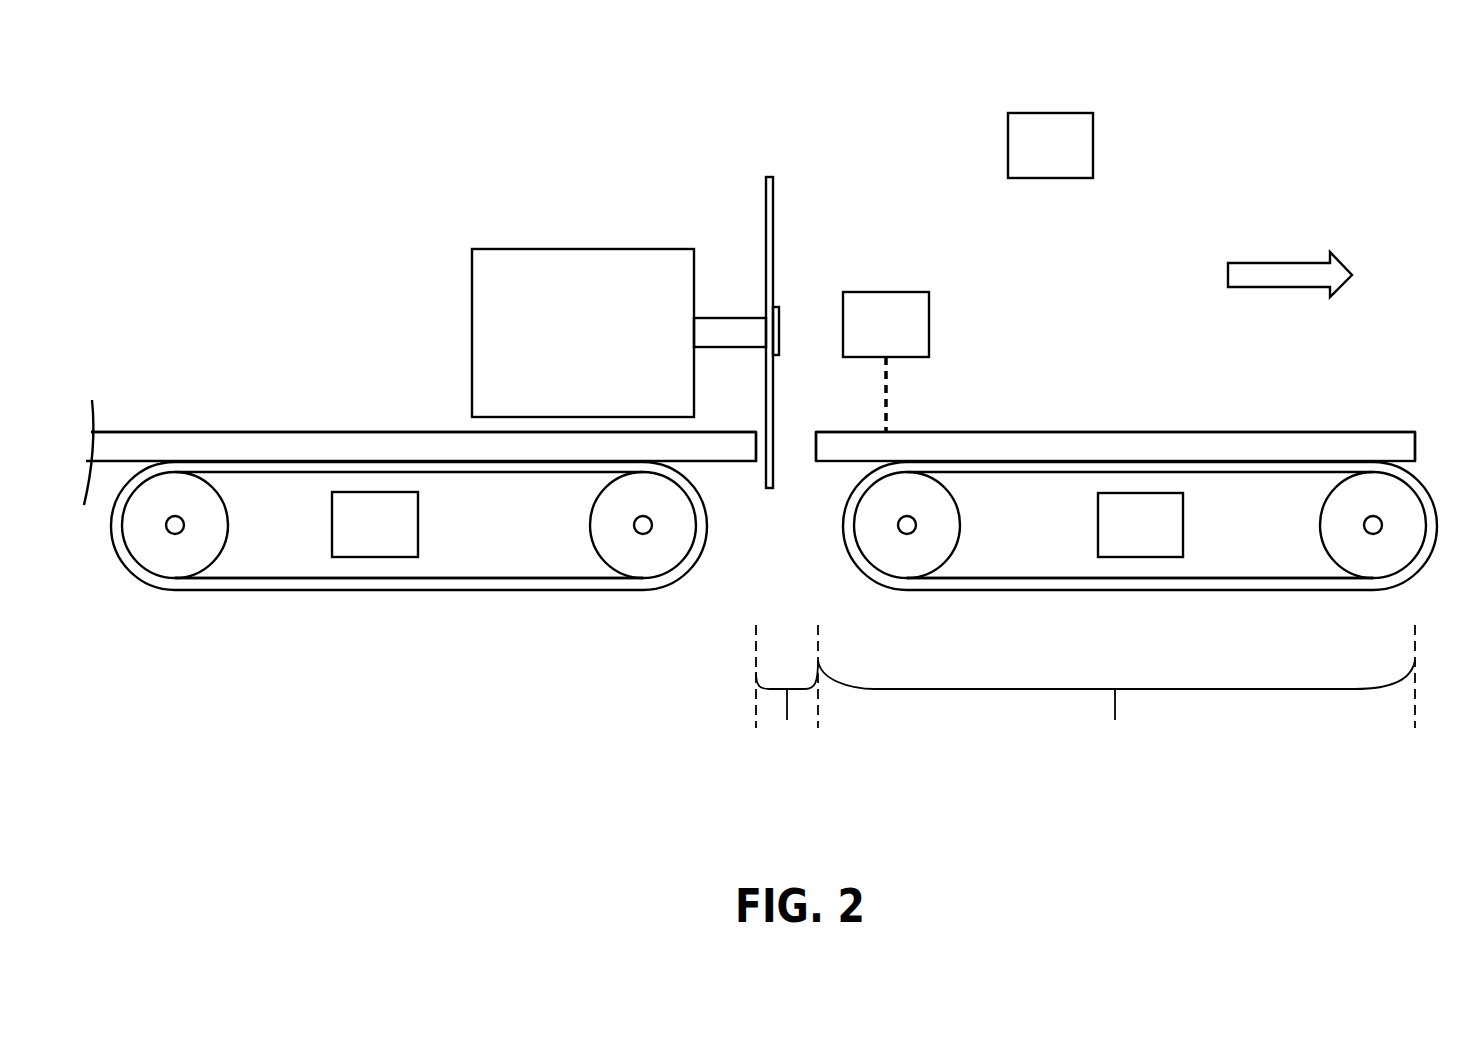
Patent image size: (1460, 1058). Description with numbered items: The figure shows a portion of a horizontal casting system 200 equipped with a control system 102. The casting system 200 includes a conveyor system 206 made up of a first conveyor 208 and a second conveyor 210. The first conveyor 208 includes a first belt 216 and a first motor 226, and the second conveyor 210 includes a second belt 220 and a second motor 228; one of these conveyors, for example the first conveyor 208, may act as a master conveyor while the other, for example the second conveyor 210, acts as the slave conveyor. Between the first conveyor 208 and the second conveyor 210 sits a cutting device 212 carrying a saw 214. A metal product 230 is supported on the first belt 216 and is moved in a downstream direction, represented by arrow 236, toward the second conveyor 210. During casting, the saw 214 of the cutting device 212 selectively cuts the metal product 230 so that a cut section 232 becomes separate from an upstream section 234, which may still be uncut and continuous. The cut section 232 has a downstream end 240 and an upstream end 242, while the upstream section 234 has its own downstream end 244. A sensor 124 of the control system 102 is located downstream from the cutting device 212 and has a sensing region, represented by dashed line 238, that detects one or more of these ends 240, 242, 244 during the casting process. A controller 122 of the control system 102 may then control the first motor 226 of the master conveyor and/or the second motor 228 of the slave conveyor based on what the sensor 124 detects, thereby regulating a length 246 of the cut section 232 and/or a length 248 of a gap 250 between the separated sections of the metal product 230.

The casting system 200 is at (356, 170).
The control system 102 is at (895, 106).
The conveyor system 206 is at (1233, 178).
The controller 122 is at (1050, 145).
The sensor 124 is at (886, 324).
The cutting device 212 is at (578, 275).
The saw 214 is at (766, 175).
The upstream section 234 is at (203, 443).
The metal product 230 is at (284, 445).
The downstream end 244 is at (757, 463).
The first conveyor 208 is at (313, 590).
The first belt 216 is at (537, 580).
The first motor 226 is at (375, 524).
The cut section 232 is at (1268, 447).
The downstream end 240 is at (1417, 430).
The upstream end 242 is at (815, 447).
The gap 250 is at (797, 470).
The second conveyor 210 is at (998, 583).
The second belt 220 is at (1212, 582).
The second motor 228 is at (1140, 525).
The arrow 236 is at (1290, 275).
The dashed line 238 is at (887, 382).
The length of gap 248 is at (787, 688).
The length of cut section 246 is at (1116, 687).